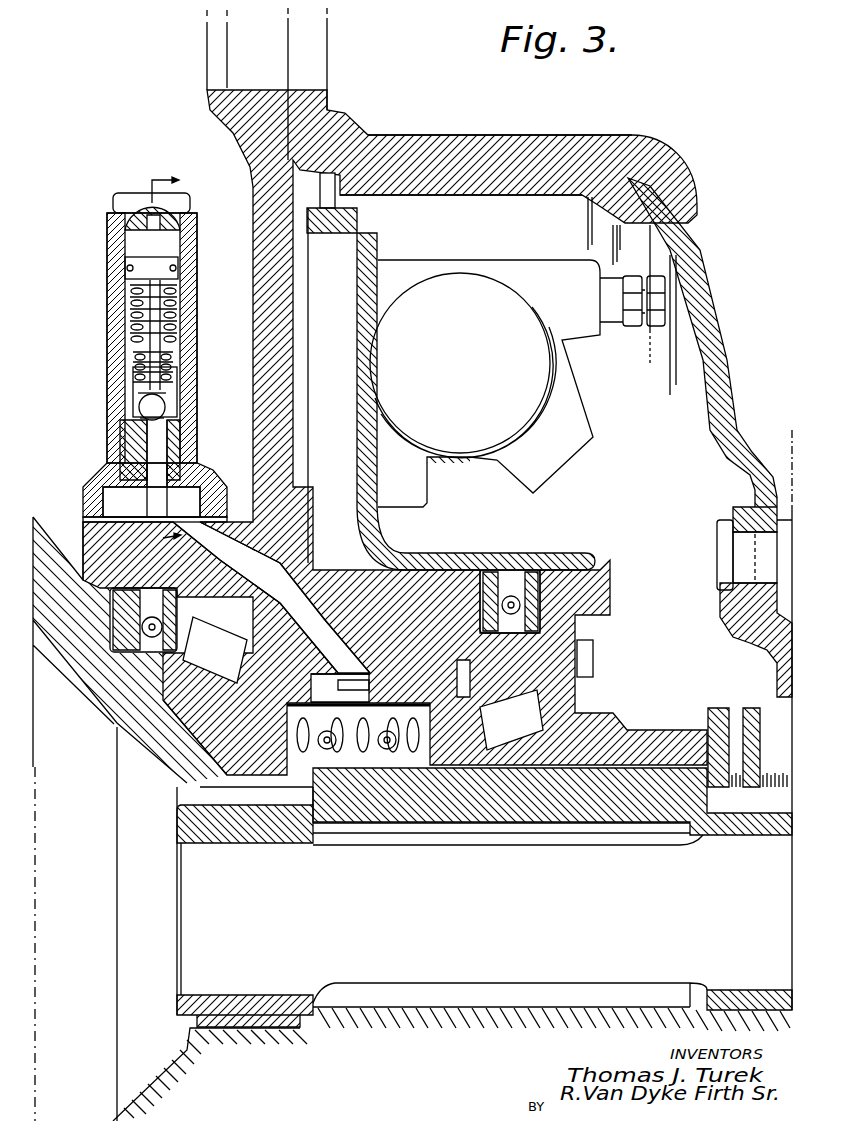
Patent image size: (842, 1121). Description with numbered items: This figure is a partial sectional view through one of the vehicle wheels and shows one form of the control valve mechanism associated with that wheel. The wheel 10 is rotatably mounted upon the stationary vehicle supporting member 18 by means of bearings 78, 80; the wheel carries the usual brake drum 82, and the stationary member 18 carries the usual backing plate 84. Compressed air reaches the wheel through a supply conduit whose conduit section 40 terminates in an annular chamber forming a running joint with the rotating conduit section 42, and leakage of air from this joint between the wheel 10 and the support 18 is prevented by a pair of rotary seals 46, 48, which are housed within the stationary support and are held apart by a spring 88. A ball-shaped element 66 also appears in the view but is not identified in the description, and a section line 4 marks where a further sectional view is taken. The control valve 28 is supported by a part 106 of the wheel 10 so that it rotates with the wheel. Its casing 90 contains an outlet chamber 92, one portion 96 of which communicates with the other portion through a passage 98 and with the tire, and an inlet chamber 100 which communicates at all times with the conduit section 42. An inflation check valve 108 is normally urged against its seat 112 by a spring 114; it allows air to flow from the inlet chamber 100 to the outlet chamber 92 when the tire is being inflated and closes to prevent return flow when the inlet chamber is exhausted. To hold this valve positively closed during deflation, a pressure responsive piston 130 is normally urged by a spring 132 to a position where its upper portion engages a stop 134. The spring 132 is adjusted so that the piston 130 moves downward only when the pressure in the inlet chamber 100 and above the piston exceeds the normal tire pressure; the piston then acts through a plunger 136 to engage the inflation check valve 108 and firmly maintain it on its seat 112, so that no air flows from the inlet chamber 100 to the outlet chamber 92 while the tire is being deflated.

The section line 4- 4 is at (172, 361).
The vehicle wheel 10 is at (255, 343).
The vehicle supporting member 18 is at (513, 812).
The control valve 28 is at (100, 337).
The conduit section 40 is at (183, 742).
The conduit section 42 is at (312, 618).
The rotary seal 46 is at (287, 790).
The rotary seal 48 is at (407, 790).
The ball 66 is at (502, 369).
The bearing 78 is at (227, 664).
The bearing 80 is at (524, 725).
The brake drum 82 is at (440, 140).
The backing plate 84 is at (545, 565).
The spring 88 is at (362, 750).
The casing 90 is at (110, 268).
The outlet chamber 92 is at (133, 399).
The portion of outlet chamber 96 is at (133, 386).
The passage 98 is at (177, 400).
The inlet chamber 100 is at (142, 514).
The part of the wheel 106 is at (83, 527).
The inflation check valve 108 is at (160, 412).
The seat 112 is at (147, 434).
The spring 114 is at (170, 378).
The piston 130 is at (167, 263).
The spring 132 is at (173, 291).
The stop 134 is at (133, 248).
The plunger 136 is at (160, 320).